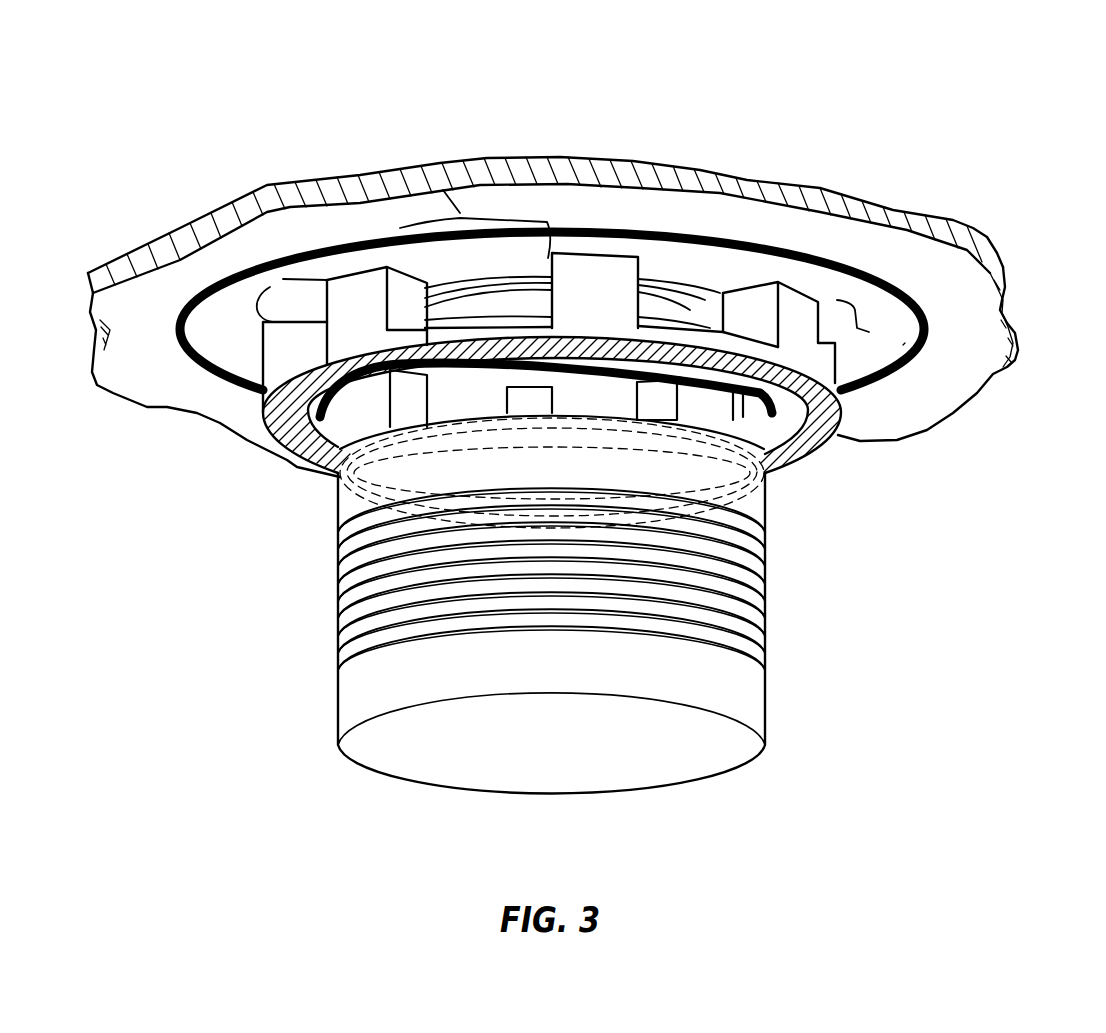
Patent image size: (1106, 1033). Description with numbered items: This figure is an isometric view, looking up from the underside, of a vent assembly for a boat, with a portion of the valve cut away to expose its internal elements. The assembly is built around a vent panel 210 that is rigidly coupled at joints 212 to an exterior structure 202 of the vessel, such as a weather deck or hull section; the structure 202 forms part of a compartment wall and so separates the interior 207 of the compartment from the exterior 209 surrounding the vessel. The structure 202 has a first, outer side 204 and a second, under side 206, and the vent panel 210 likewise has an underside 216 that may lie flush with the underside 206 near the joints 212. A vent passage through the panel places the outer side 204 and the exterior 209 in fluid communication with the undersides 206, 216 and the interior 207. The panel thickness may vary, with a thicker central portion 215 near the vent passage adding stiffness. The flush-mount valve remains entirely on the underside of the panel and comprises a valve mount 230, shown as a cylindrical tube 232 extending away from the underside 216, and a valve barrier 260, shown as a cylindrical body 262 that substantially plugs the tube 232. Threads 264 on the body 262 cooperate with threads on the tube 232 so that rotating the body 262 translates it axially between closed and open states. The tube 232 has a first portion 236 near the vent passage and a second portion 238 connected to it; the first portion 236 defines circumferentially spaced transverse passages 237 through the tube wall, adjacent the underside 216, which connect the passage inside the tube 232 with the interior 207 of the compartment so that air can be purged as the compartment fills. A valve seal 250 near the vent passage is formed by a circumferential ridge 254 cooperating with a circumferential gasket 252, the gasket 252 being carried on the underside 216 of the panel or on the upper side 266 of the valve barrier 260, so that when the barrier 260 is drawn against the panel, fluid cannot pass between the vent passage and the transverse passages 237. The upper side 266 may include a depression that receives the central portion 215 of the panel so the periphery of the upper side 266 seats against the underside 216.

The exterior structure 202 is at (627, 162).
The first side of the exterior structure 204 is at (786, 179).
The second side of the exterior structure 206 is at (792, 237).
The interior of the compartment 207 is at (162, 505).
The exterior surrounding the vessel 209 is at (148, 164).
The vent panel 210 is at (887, 317).
The joints 212 is at (900, 303).
The central portion of the vent panel 215 is at (576, 244).
The second side of the vent panel 216 is at (227, 333).
The valve mount 230 is at (519, 643).
The cylindrical tube 232 is at (797, 300).
The first portion of the tube 236 is at (905, 343).
The transverse passages 237 is at (445, 190).
The second portion of the tube 238 is at (850, 393).
The valve seal 250 is at (600, 207).
The circumferential gasket 252 is at (337, 474).
The circumferential ridge 254 is at (691, 303).
The valve barrier 260 is at (332, 775).
The cylindrical body 262 is at (563, 752).
The threads 264 is at (337, 627).
The upper side of the valve barrier 266 is at (740, 500).